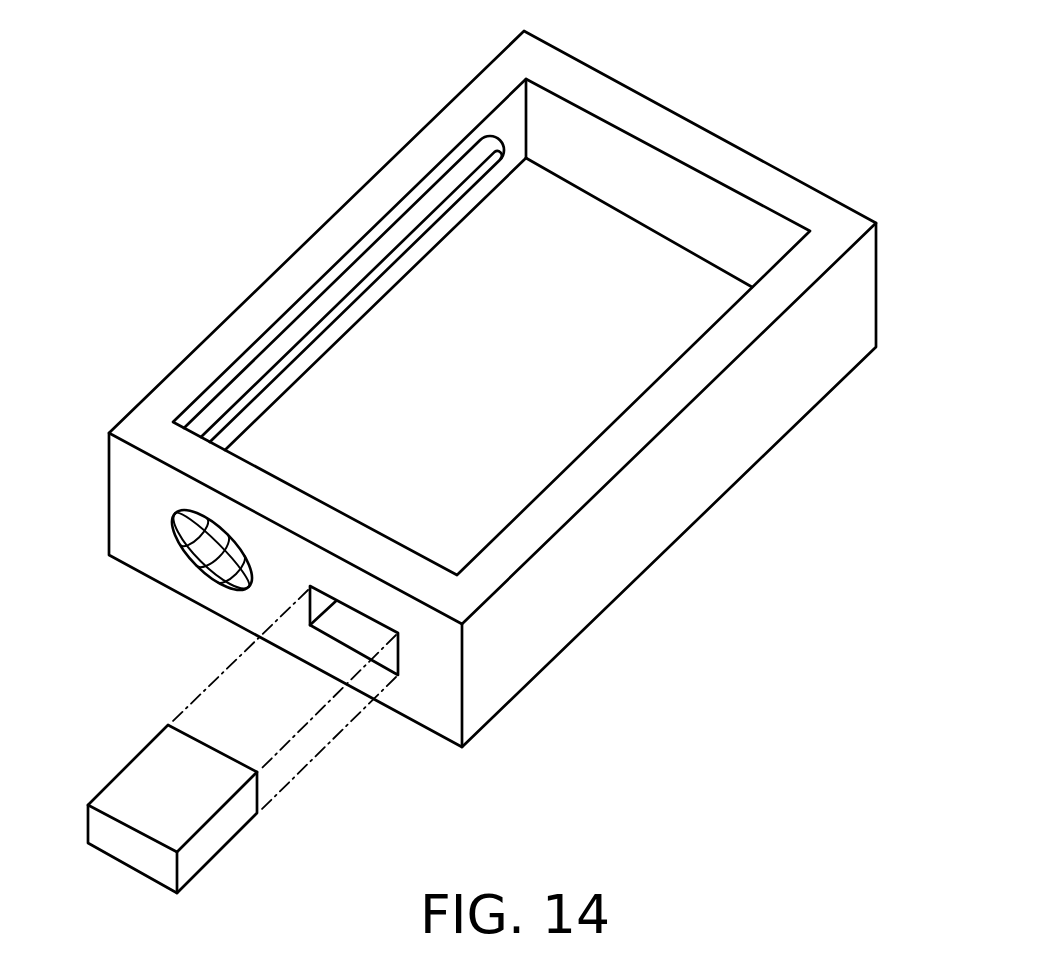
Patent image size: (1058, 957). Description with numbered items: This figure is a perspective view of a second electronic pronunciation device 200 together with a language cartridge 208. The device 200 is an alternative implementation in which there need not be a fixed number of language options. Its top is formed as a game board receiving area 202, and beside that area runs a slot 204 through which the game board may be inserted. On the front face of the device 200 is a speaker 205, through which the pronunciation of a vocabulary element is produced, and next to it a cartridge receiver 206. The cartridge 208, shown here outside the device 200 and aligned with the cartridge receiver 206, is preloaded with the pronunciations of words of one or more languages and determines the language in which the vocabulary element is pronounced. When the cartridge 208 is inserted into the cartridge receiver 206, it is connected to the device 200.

The pronunciation device 200 is at (775, 93).
The game board receiving area 202 is at (533, 243).
The slot 204 is at (375, 262).
The speaker 205 is at (190, 560).
The cartridge receiver 206 is at (400, 657).
The cartridge 208 is at (133, 787).